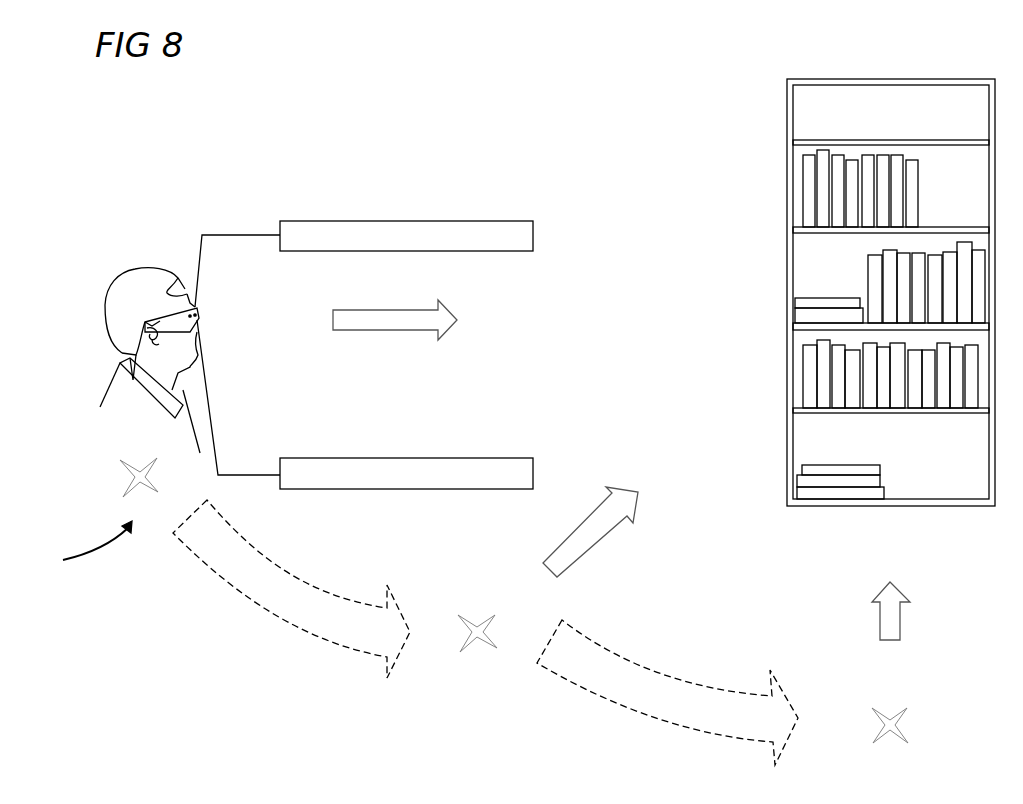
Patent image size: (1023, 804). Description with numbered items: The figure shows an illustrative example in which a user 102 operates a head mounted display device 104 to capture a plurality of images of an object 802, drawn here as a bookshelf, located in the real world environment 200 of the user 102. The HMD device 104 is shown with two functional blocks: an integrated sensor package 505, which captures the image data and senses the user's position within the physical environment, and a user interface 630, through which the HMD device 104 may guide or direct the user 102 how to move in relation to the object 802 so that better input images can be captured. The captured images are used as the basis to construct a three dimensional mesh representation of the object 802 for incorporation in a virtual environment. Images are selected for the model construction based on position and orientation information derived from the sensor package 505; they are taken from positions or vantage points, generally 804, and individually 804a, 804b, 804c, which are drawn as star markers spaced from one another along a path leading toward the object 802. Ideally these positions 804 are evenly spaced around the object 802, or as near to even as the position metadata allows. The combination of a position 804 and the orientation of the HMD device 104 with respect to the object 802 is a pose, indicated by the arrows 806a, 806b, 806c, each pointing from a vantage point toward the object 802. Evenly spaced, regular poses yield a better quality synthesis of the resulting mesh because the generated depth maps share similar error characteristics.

The real world environment 200 is at (609, 124).
The user 102 is at (103, 397).
The HMD device 104 is at (197, 303).
The sensor package 505 is at (535, 235).
The user interface 630 is at (535, 472).
The object 802 is at (784, 118).
The positions 804 is at (81, 544).
The first position 804a is at (118, 481).
The second position 804b is at (471, 612).
The third position 804c is at (889, 705).
The first pose arrow 806a is at (372, 340).
The second pose arrow 806b is at (566, 530).
The third pose arrow 806c is at (878, 626).